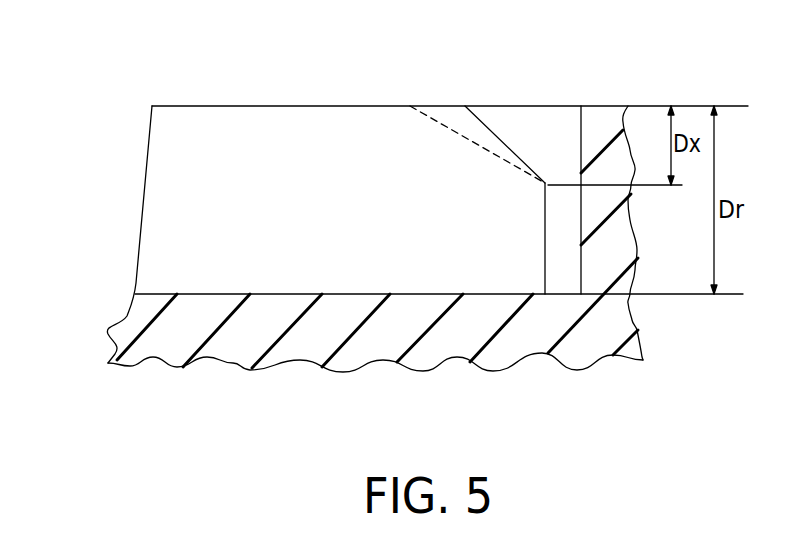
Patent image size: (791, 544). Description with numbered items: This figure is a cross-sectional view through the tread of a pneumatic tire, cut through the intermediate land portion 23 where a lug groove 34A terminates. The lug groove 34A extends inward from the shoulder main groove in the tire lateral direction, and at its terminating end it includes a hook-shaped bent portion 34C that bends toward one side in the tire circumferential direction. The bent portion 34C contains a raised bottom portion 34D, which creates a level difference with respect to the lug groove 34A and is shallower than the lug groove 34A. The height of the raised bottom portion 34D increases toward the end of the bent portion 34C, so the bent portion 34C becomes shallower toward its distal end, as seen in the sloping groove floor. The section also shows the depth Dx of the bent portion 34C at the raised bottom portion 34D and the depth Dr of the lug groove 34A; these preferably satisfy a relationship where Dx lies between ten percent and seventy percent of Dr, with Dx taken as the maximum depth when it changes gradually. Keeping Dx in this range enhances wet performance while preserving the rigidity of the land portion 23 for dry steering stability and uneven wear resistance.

The intermediate land portion 23 is at (282, 106).
The lug groove 34A is at (217, 295).
The bent portion 34C is at (515, 133).
The raised bottom portion 34D is at (502, 137).